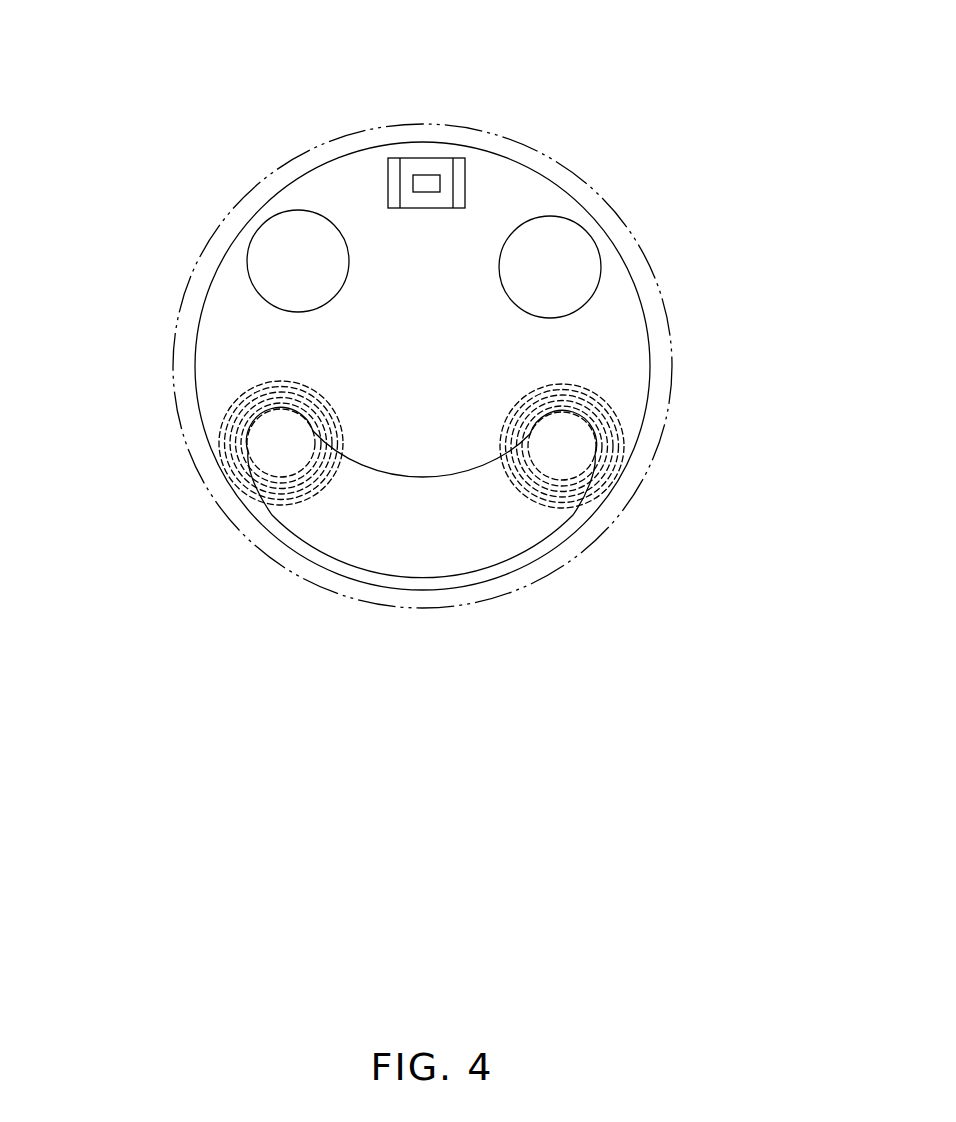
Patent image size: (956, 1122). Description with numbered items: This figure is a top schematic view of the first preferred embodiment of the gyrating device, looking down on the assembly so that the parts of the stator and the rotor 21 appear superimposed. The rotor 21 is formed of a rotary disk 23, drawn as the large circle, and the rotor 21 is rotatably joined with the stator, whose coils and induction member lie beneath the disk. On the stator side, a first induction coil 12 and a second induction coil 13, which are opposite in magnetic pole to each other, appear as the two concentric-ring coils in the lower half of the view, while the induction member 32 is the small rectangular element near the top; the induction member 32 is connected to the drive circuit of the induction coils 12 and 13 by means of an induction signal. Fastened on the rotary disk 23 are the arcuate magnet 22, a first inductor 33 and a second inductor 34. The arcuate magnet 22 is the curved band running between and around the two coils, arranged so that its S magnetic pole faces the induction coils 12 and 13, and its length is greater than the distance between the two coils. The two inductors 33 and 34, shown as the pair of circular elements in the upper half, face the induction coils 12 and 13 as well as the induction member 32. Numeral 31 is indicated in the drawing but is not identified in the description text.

The first induction coil 12 is at (617, 433).
The second induction coil 13 is at (228, 450).
The rotor 21 is at (570, 543).
The arcuate magnet 22 is at (441, 565).
The rotary disk 23 is at (213, 332).
The base plate 31 is at (520, 194).
The induction member 32 is at (428, 180).
The first inductor 33 is at (282, 237).
The second inductor 34 is at (577, 247).